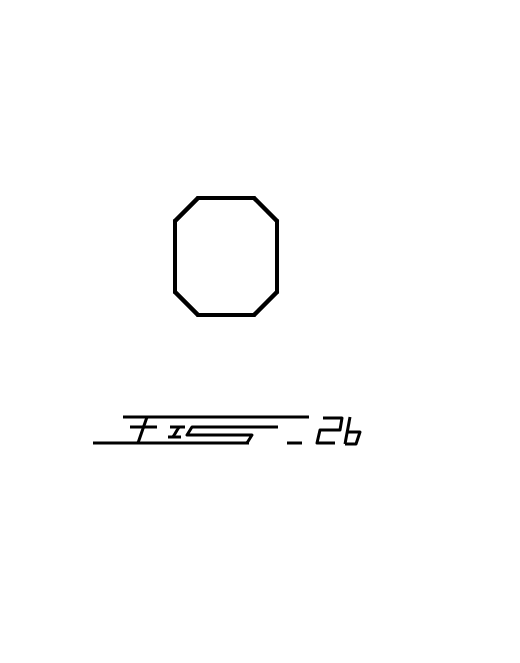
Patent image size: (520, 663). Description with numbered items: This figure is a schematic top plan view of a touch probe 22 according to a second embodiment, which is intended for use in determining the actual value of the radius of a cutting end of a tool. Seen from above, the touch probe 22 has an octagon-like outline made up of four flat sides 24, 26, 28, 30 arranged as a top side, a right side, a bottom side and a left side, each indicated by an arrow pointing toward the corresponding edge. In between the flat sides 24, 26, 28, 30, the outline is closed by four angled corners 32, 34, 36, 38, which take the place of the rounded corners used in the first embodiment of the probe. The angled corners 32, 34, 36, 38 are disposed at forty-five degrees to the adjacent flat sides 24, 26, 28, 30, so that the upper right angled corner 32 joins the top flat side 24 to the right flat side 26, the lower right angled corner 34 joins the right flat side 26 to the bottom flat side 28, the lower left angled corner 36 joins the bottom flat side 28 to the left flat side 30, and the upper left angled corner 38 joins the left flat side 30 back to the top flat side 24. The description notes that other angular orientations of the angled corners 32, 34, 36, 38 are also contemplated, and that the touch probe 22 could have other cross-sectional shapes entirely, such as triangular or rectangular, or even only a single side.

The touch probe 22 is at (378, 158).
The flat side 24 is at (225, 188).
The flat side 26 is at (290, 257).
The flat side 28 is at (225, 327).
The flat side 30 is at (162, 257).
The angled corner 32 is at (287, 197).
The angled corner 34 is at (287, 318).
The angled corner 36 is at (167, 314).
The angled corner 38 is at (167, 198).